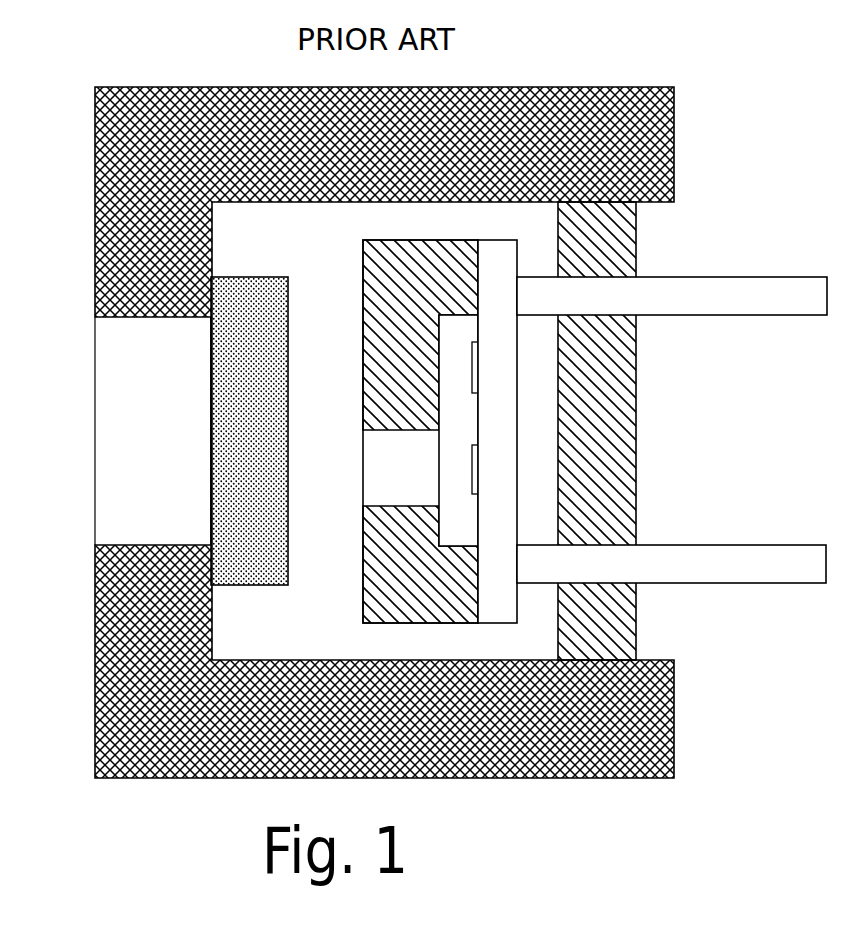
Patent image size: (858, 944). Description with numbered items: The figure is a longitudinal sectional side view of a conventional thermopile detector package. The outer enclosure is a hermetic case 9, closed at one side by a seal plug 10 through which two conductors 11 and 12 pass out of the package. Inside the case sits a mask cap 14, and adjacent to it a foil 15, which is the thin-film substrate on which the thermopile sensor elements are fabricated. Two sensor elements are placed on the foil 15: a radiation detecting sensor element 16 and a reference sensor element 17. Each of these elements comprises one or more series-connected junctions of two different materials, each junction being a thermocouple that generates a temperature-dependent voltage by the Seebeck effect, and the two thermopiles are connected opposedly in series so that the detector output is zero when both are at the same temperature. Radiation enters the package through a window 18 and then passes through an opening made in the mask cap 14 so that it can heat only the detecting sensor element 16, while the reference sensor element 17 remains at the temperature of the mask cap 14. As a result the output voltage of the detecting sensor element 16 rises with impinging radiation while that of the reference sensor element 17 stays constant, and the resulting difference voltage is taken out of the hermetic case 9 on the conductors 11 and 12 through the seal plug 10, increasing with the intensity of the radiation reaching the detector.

The hermetic case 9 is at (213, 87).
The seal plug 10 is at (637, 247).
The conductor 11 is at (730, 277).
The conductor 12 is at (692, 584).
The mask cap 14 is at (388, 240).
The foil 15 is at (492, 238).
The radiation detecting sensor element 16 is at (475, 469).
The reference sensor element 17 is at (475, 368).
The window 18 is at (245, 277).